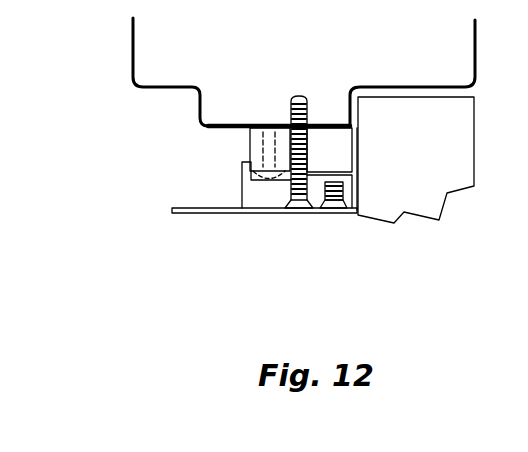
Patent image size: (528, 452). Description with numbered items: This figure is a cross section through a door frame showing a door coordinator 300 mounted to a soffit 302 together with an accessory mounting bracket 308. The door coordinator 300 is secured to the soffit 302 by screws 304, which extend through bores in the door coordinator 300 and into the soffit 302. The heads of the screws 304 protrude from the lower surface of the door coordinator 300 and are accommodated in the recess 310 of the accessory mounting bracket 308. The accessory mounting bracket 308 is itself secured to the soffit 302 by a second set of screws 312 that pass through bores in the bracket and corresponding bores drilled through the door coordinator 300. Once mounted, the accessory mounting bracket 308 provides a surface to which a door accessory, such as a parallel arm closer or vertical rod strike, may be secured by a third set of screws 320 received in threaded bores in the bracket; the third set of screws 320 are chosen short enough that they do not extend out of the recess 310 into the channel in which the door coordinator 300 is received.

The door coordinator 300 is at (245, 148).
The soffit 302 is at (197, 107).
The screws 304 is at (268, 126).
The accessory mounting bracket 308 is at (243, 191).
The recess 310 is at (347, 175).
The second set of screws 312 is at (298, 208).
The third set of screws 320 is at (335, 213).